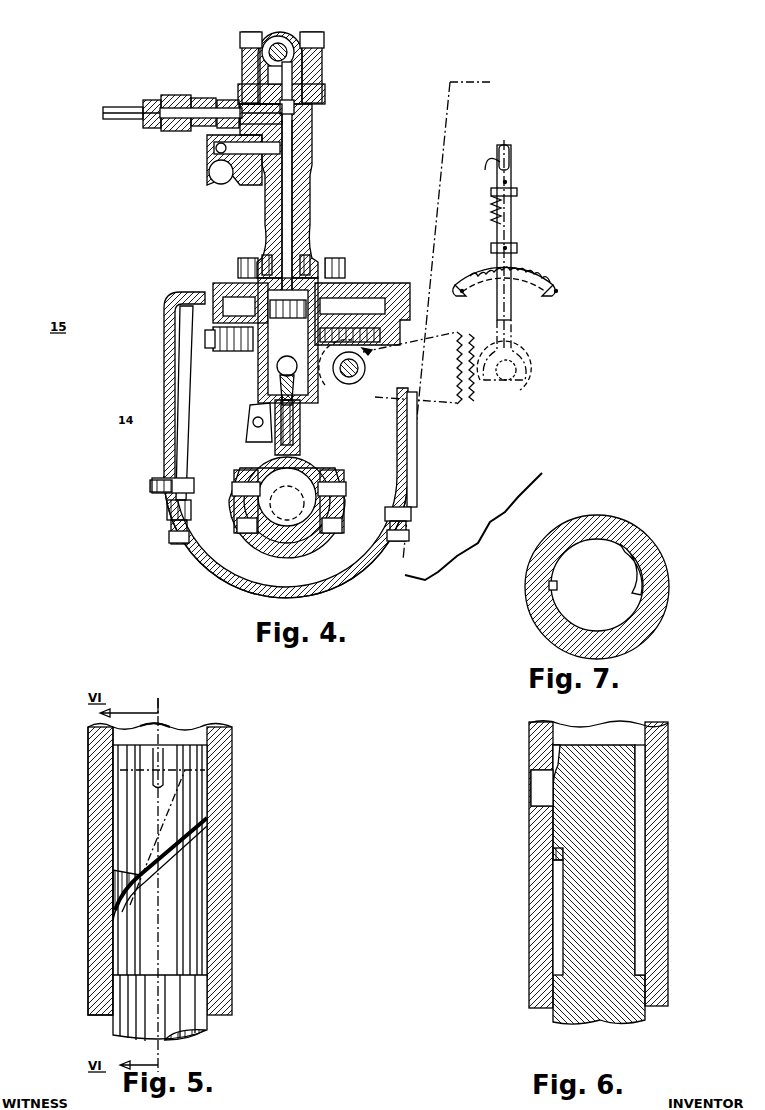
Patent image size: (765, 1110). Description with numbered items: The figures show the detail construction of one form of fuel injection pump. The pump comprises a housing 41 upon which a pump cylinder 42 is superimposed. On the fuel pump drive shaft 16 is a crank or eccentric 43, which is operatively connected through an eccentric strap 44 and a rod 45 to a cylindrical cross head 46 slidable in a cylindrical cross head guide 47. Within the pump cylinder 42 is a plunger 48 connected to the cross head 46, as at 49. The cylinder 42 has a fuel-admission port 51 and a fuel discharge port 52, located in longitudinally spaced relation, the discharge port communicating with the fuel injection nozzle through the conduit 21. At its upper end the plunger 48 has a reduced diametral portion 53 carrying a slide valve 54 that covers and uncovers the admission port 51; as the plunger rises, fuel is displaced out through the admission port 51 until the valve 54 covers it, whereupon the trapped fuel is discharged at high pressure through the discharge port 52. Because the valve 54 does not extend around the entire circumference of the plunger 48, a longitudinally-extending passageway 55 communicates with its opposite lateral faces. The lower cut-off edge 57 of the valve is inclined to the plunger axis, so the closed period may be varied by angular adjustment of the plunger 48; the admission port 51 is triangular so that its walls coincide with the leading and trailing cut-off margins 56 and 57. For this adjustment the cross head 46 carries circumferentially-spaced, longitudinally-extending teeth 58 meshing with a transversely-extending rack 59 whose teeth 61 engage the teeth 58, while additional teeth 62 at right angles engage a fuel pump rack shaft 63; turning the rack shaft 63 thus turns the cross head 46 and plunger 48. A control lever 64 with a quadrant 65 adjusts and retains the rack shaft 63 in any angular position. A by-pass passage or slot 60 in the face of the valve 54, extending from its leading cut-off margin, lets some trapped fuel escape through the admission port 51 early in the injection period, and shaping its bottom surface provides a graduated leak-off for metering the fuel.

In FIG. 4, the fuel pump drive shaft 16 is at (244, 520).
In FIG. 4, the conduit 21 is at (113, 108).
In FIG. 4, the housing 41 is at (162, 390).
In FIG. 4, the pump cylinder 42 is at (266, 218).
In FIG. 5, the pump cylinder 42 is at (233, 935).
In FIG. 4, the crank or eccentric 43 is at (288, 587).
In FIG. 4, the eccentric strap 44 is at (352, 510).
In FIG. 4, the rod 45 is at (305, 420).
In FIG. 4, the cross head 46 is at (270, 415).
In FIG. 4, the cross head guide 47 is at (266, 392).
In FIG. 4, the plunger 48 is at (305, 215).
In FIG. 5, the plunger 48 is at (207, 1000).
In FIG. 6, the plunger 48 is at (610, 986).
In FIG. 4, the connection 49 is at (322, 262).
In FIG. 4, the fuel-admission port 51 is at (268, 175).
In FIG. 5, the fuel-admission port 51 is at (230, 790).
In FIG. 6, the fuel-admission port 51 is at (530, 780).
In FIG. 4, the fuel discharge port 52 is at (237, 95).
In FIG. 5, the reduced diametral portion 53 is at (180, 892).
In FIG. 4, the slide valve 54 is at (292, 134).
In FIG. 5, the slide valve 54 is at (120, 858).
In FIG. 7, the longitudinally-extending passageway 55 is at (637, 572).
In FIG. 6, the longitudinally-extending passageway 55 is at (640, 882).
In FIG. 5, the leading cut-off margin 56 is at (160, 722).
In FIG. 5, the trailing cut-off margin 57 is at (170, 852).
In FIG. 4, the teeth 58 is at (182, 305).
In FIG. 4, the rack 59 is at (236, 357).
In FIG. 7, the by-pass passage or slot 60 is at (528, 607).
In FIG. 5, the by-pass passage or slot 60 is at (153, 760).
In FIG. 6, the by-pass passage or slot 60 is at (546, 754).
In FIG. 4, the teeth 61 is at (212, 336).
In FIG. 4, the additional teeth 62 is at (396, 368).
In FIG. 4, the fuel pump rack shaft 63 is at (403, 400).
In FIG. 4, the control lever 64 is at (512, 210).
In FIG. 4, the quadrant 65 is at (537, 270).